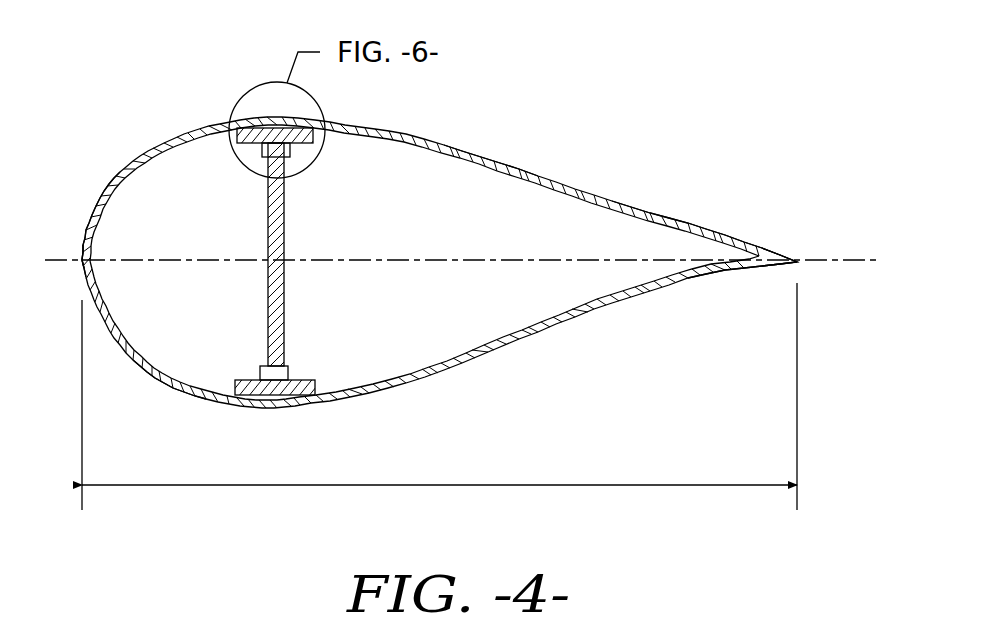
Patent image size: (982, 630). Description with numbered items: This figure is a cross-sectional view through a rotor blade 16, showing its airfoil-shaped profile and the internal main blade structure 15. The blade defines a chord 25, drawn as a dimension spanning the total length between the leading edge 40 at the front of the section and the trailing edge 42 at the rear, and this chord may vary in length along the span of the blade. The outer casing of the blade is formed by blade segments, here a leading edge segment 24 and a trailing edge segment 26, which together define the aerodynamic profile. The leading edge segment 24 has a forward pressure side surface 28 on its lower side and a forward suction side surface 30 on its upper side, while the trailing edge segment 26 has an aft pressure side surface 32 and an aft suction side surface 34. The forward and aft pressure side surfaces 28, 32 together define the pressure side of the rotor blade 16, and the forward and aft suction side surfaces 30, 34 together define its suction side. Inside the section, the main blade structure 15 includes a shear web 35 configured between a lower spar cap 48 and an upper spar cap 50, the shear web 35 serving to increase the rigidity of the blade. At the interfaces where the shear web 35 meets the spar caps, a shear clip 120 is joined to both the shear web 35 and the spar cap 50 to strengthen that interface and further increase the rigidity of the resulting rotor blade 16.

The main blade structure 15 is at (259, 330).
The rotor blade 16 is at (677, 83).
The leading edge segment 24 is at (108, 182).
The chord 25 is at (558, 486).
The trailing edge segment 26 is at (633, 198).
The forward pressure side surface 28 is at (168, 378).
The forward suction side surface 30 is at (163, 140).
The aft pressure side surface 32 is at (503, 343).
The aft suction side surface 34 is at (497, 153).
The shear web 35 is at (284, 240).
The leading edge 40 is at (80, 259).
The trailing edge 42 is at (800, 259).
The spar cap 48 is at (295, 378).
The spar cap 50 is at (295, 152).
The shear clip 120 is at (247, 165).